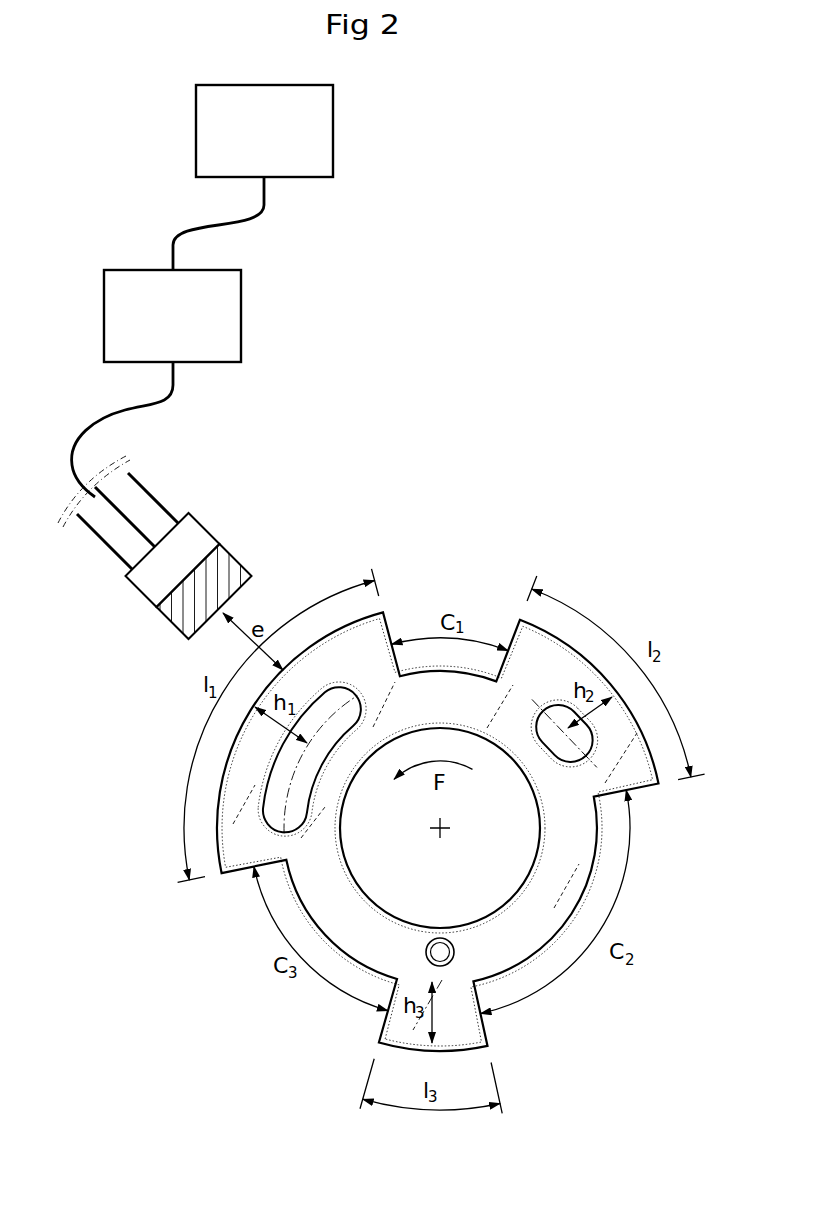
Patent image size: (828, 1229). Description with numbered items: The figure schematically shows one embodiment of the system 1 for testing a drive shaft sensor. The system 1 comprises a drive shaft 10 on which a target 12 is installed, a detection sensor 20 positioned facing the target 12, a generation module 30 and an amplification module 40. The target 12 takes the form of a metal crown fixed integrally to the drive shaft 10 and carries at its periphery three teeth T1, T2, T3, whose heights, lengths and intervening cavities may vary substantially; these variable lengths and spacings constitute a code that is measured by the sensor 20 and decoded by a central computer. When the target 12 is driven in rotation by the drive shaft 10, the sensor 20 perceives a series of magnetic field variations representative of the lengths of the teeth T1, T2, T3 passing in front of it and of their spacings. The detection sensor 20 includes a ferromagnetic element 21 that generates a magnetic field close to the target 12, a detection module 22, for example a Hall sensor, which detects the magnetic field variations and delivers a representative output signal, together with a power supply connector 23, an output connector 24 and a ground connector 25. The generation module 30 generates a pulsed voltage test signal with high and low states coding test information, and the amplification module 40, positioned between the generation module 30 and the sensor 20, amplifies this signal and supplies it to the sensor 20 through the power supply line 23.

The system 1 is at (592, 1011).
The drive shaft 10 is at (443, 832).
The target 12 is at (580, 866).
The detection sensor 20 is at (180, 535).
The ferromagnetic element 21 is at (225, 578).
The detection module 22 is at (158, 593).
The power supply connector 23 is at (140, 484).
The output connector 24 is at (133, 522).
The ground connector 25 is at (95, 532).
The generation module 30 is at (316, 152).
The amplification module 40 is at (223, 337).
The tooth T1 is at (242, 776).
The tooth T2 is at (608, 724).
The tooth T3 is at (443, 1023).